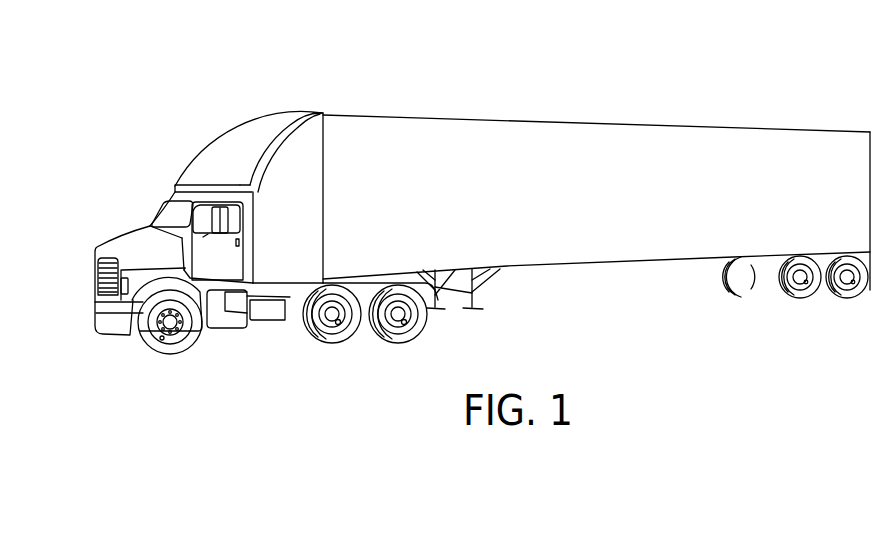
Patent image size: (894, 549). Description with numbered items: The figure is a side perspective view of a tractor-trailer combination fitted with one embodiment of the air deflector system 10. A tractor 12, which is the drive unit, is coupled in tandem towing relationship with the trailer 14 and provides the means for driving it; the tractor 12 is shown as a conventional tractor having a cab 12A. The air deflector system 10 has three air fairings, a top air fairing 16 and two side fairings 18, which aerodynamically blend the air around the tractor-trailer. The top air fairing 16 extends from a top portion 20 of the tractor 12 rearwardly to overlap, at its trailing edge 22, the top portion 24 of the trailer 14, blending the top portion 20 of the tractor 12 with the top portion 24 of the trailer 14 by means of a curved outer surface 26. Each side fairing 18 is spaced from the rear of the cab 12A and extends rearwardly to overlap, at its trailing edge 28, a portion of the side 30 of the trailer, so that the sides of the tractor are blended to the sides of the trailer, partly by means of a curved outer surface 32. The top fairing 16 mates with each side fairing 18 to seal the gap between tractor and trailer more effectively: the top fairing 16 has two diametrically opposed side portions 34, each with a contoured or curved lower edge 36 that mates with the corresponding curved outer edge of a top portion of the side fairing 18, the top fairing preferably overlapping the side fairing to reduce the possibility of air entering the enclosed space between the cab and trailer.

The air deflector system 10 is at (312, 82).
The tractor 12 is at (105, 242).
The cab 12A is at (168, 218).
The trailer 14 is at (800, 130).
The top air fairing 16 is at (232, 138).
The side fairing 18 is at (315, 192).
The top portion of the tractor 20 is at (175, 199).
The trailing edge 22 is at (310, 113).
The top portion of the trailer 24 is at (366, 116).
The curved outer surface 26 is at (272, 122).
The trailing edge 28 is at (323, 222).
The side of the trailer 30 is at (590, 140).
The curved outer surface 32 is at (317, 260).
The side portion 34 is at (242, 176).
The curved lower edge 36 is at (280, 139).